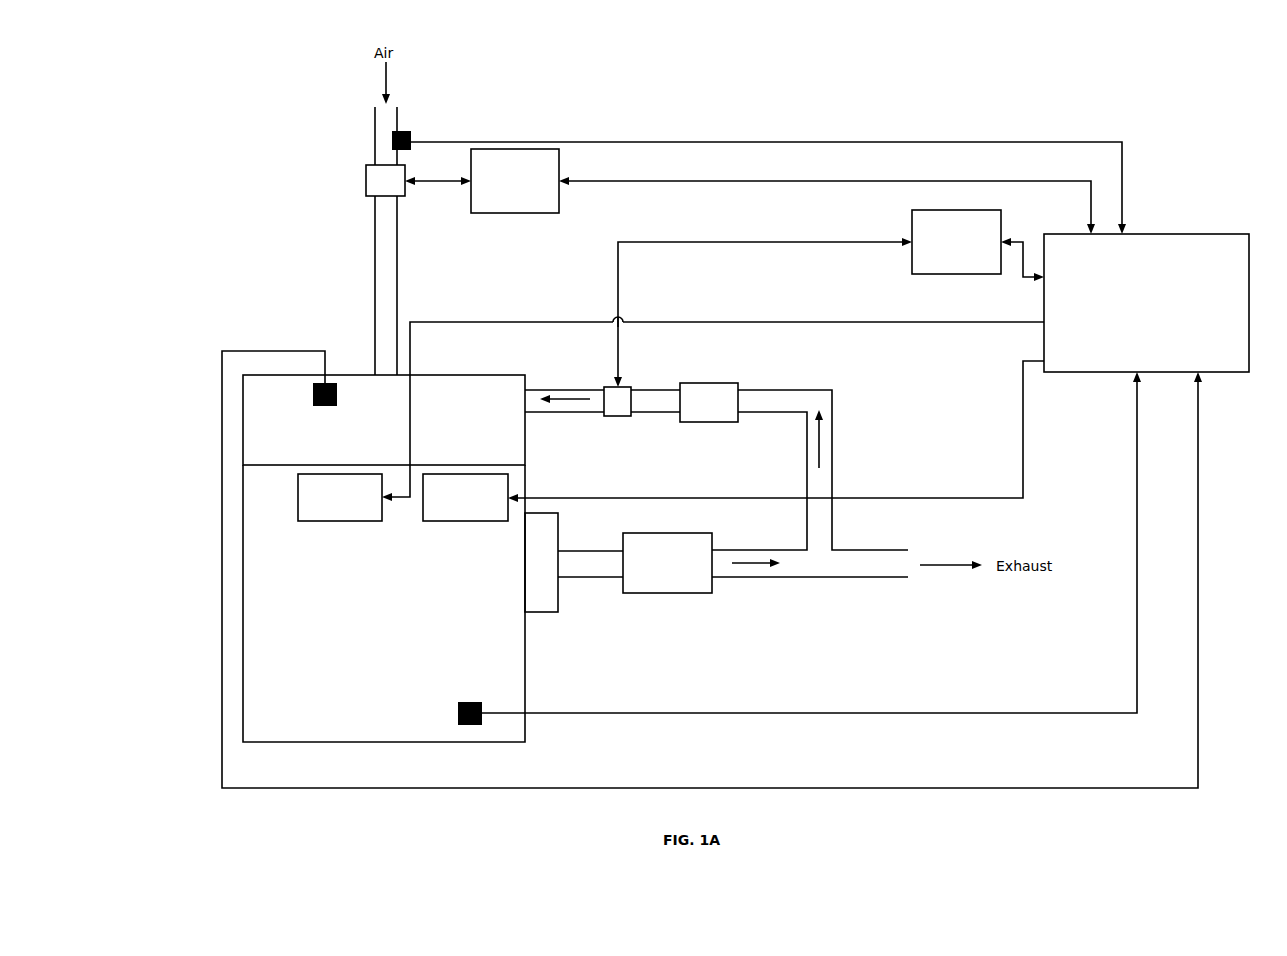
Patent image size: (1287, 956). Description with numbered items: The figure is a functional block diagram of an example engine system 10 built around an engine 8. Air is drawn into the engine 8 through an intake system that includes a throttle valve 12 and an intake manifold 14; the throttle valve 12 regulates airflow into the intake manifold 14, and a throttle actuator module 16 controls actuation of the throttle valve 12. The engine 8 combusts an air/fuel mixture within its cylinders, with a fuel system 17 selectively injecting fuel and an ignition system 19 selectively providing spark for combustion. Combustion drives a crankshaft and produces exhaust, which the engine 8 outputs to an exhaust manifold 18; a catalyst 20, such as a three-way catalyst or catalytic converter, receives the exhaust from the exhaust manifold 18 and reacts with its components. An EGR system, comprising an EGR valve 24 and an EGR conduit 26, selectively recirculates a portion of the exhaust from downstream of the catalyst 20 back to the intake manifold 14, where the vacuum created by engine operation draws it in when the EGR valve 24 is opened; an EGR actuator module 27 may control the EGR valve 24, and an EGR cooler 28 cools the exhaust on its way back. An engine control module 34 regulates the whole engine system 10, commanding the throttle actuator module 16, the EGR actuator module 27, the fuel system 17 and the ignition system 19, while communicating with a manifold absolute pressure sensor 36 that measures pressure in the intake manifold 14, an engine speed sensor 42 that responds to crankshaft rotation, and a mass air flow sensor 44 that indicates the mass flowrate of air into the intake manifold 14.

The engine system 10 is at (198, 47).
The engine 8 is at (525, 668).
The throttle valve 12 is at (366, 181).
The intake manifold 14 is at (452, 375).
The throttle actuator module 16 is at (471, 197).
The fuel system 17 is at (465, 521).
The exhaust manifold 18 is at (558, 532).
The ignition system 19 is at (340, 521).
The catalyst 20 is at (672, 533).
The EGR valve 24 is at (619, 416).
The EGR conduit 26 is at (832, 408).
The EGR actuator module 27 is at (950, 274).
The EGR cooler 28 is at (705, 422).
The engine control module 34 is at (1180, 234).
The manifold absolute pressure sensor 36 is at (330, 407).
The engine speed sensor 42 is at (470, 702).
The mass air flow sensor 44 is at (406, 130).